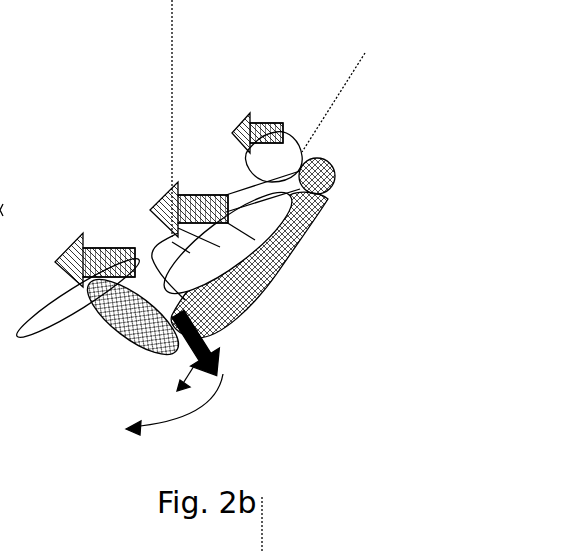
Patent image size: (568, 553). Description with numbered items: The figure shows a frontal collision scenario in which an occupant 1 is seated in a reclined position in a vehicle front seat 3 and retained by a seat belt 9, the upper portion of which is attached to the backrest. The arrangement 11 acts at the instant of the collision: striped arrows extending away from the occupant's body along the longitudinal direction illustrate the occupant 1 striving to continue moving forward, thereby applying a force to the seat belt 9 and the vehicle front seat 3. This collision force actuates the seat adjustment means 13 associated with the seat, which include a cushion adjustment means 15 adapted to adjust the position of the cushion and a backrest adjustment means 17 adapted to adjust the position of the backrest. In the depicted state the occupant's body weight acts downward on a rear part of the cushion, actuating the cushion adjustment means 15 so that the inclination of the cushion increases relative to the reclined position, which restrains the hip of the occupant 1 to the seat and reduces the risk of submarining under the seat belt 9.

The occupant 1 is at (232, 158).
The vehicle front seat 3 is at (323, 214).
The seat belt 9 is at (180, 310).
The arrangement 11 is at (297, 265).
The seat adjustment means 13 is at (250, 337).
The cushion adjustment means 15 is at (100, 309).
The backrest adjustment means 17 is at (228, 243).